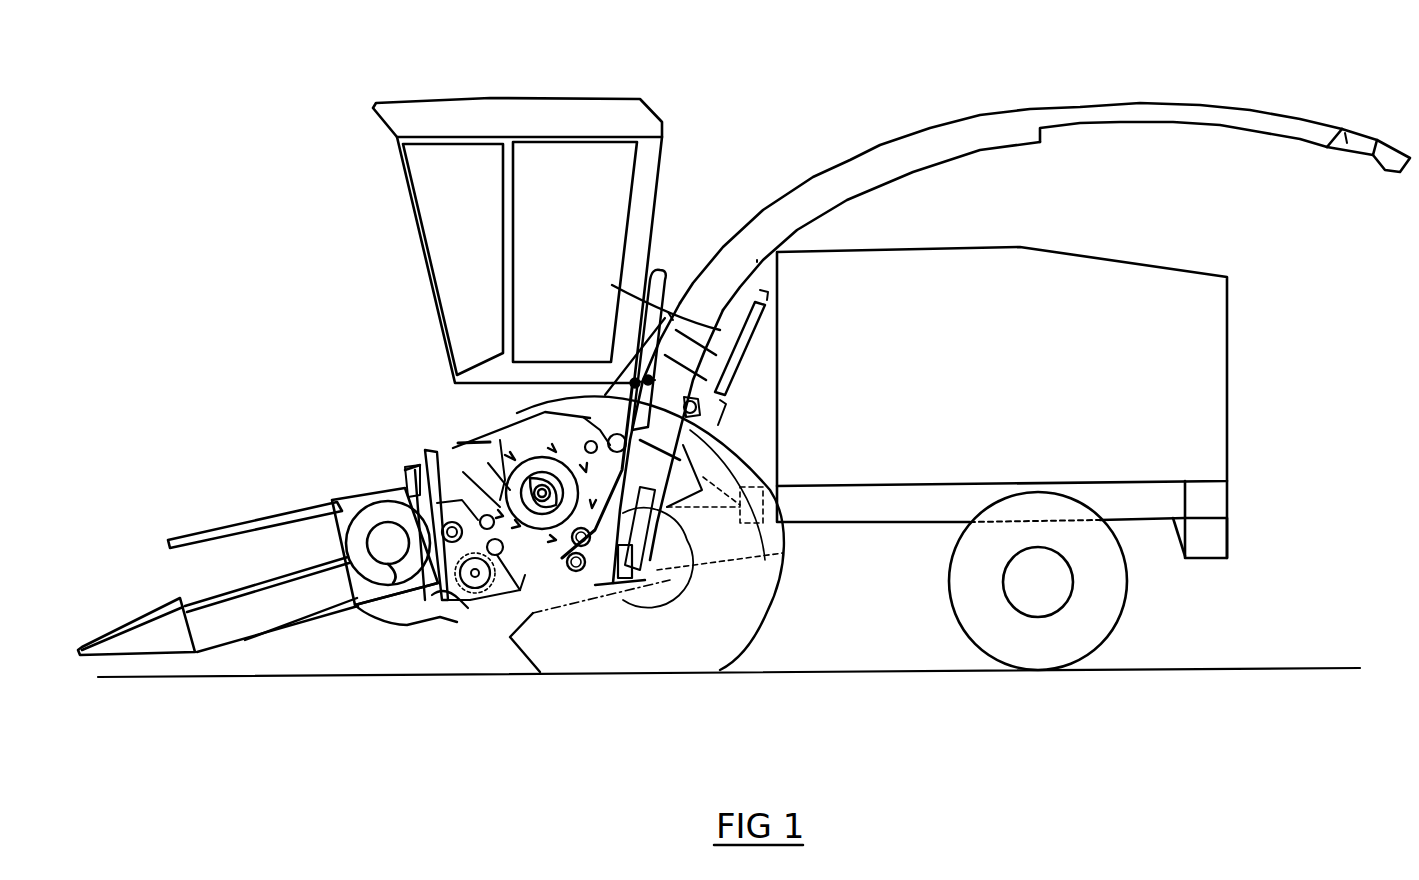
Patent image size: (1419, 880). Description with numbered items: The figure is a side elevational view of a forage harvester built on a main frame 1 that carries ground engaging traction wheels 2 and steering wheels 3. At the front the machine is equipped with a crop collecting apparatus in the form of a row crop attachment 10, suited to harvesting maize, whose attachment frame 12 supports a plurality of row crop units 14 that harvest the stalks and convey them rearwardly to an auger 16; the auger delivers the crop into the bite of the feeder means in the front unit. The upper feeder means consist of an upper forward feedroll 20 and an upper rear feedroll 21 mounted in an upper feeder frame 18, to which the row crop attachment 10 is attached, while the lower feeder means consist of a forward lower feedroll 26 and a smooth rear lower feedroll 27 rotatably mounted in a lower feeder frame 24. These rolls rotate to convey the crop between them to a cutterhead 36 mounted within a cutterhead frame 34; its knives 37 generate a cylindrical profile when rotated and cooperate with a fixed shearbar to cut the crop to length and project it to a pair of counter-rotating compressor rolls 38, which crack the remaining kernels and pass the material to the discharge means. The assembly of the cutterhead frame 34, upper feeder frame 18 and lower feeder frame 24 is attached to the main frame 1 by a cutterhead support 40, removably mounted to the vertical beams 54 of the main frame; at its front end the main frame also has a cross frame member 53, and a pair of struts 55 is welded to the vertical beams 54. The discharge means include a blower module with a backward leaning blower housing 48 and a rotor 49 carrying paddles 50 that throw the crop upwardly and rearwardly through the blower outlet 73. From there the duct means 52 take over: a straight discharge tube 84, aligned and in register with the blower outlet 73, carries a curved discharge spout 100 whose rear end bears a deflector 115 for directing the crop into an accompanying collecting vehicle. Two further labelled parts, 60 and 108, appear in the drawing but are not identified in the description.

The main frame 1 is at (850, 538).
The ground engaging traction wheels 2 is at (655, 655).
The steering wheels 3 is at (1048, 648).
The row crop attachment 10 is at (247, 510).
The attachment frame 12 is at (397, 605).
The row crop units 14 is at (227, 627).
The auger 16 is at (372, 512).
The upper feeder frame 18 is at (445, 455).
The upper forward feedroll 20 is at (425, 475).
The upper rear feedroll 21 is at (457, 489).
The lower feeder frame 24 is at (487, 620).
The forward lower feedroll 26 is at (465, 605).
The rear lower feedroll 27 is at (520, 578).
The cutterhead frame 34 is at (485, 432).
The cutterhead 36 is at (472, 444).
The knives 37 is at (520, 452).
The compressor rolls 38 is at (568, 575).
The cutterhead support 40 is at (590, 440).
The blower housing 48 is at (648, 546).
The rotor 49 is at (648, 527).
The paddles 50 is at (662, 471).
The duct means 52 is at (986, 102).
The cross frame member 53 is at (628, 578).
The vertical beams 54 is at (660, 272).
The struts 55 is at (702, 424).
The linkage 60 is at (700, 448).
The blower outlet 73 is at (630, 380).
The discharge tube 84 is at (645, 312).
The discharge spout 100 is at (877, 150).
The hydraulic cylinder 108 is at (745, 335).
The deflector 115 is at (1374, 125).